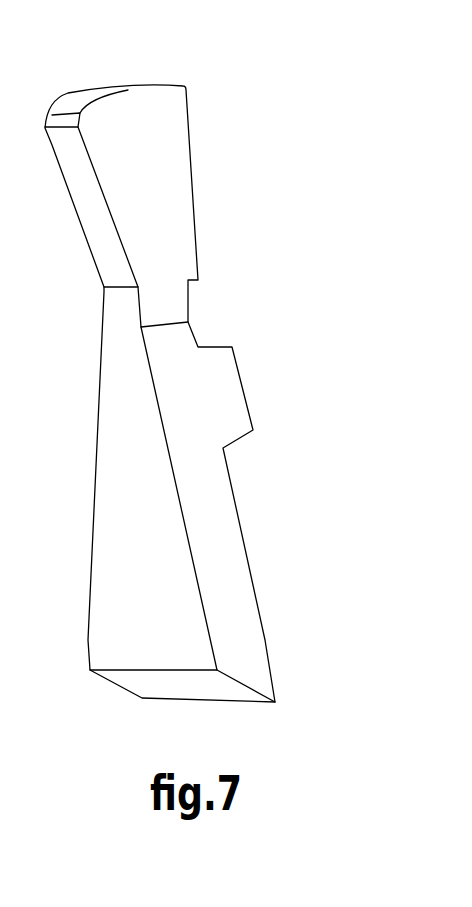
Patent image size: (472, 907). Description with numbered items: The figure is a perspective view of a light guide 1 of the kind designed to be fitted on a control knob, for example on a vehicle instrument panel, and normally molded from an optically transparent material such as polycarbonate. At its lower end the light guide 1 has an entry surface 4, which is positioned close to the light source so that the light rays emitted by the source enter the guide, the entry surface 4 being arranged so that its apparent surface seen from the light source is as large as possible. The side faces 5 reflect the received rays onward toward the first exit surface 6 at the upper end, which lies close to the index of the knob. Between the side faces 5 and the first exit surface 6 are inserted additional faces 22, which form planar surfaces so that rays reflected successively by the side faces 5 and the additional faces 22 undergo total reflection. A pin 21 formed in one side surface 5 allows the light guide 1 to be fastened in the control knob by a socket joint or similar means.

The light guide 1 is at (287, 279).
The entry surface 4 is at (170, 685).
The side faces 5 is at (122, 463).
The first exit surface 6 is at (76, 95).
The pin 21 is at (243, 377).
The additional faces 22 is at (105, 218).